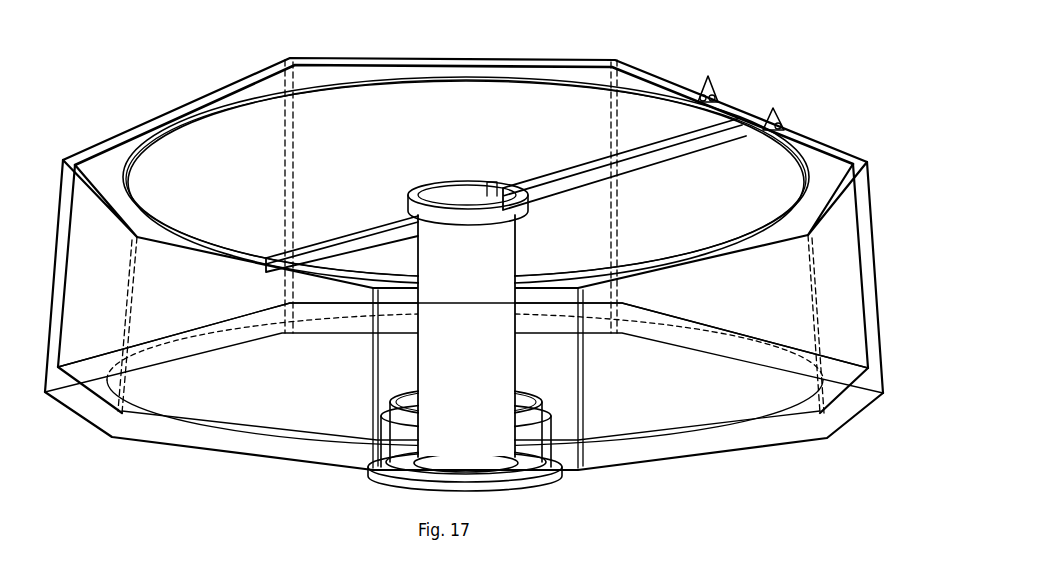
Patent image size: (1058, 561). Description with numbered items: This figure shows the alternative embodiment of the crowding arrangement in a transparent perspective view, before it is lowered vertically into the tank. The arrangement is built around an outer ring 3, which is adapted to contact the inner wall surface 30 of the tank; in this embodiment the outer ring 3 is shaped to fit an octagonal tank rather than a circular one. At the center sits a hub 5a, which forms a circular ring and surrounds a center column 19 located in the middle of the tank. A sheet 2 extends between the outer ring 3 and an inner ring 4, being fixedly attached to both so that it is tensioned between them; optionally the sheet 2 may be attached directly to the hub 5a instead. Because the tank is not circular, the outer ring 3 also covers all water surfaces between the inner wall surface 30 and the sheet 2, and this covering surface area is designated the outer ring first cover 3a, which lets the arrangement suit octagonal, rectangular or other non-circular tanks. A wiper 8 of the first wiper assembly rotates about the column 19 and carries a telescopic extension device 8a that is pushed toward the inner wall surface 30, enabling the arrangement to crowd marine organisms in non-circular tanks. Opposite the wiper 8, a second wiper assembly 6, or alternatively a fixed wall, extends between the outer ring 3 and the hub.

The sheet 2 is at (212, 124).
The outer ring 3 is at (835, 163).
The outer ring first cover 3a is at (818, 192).
The inner wall surface 30 is at (840, 272).
The inner ring 4 is at (489, 188).
The hub 5a is at (447, 182).
The second wiper assembly 6 is at (383, 250).
The wiper 8 is at (567, 178).
The telescopic extension device 8a is at (720, 128).
The center column 19 is at (463, 348).